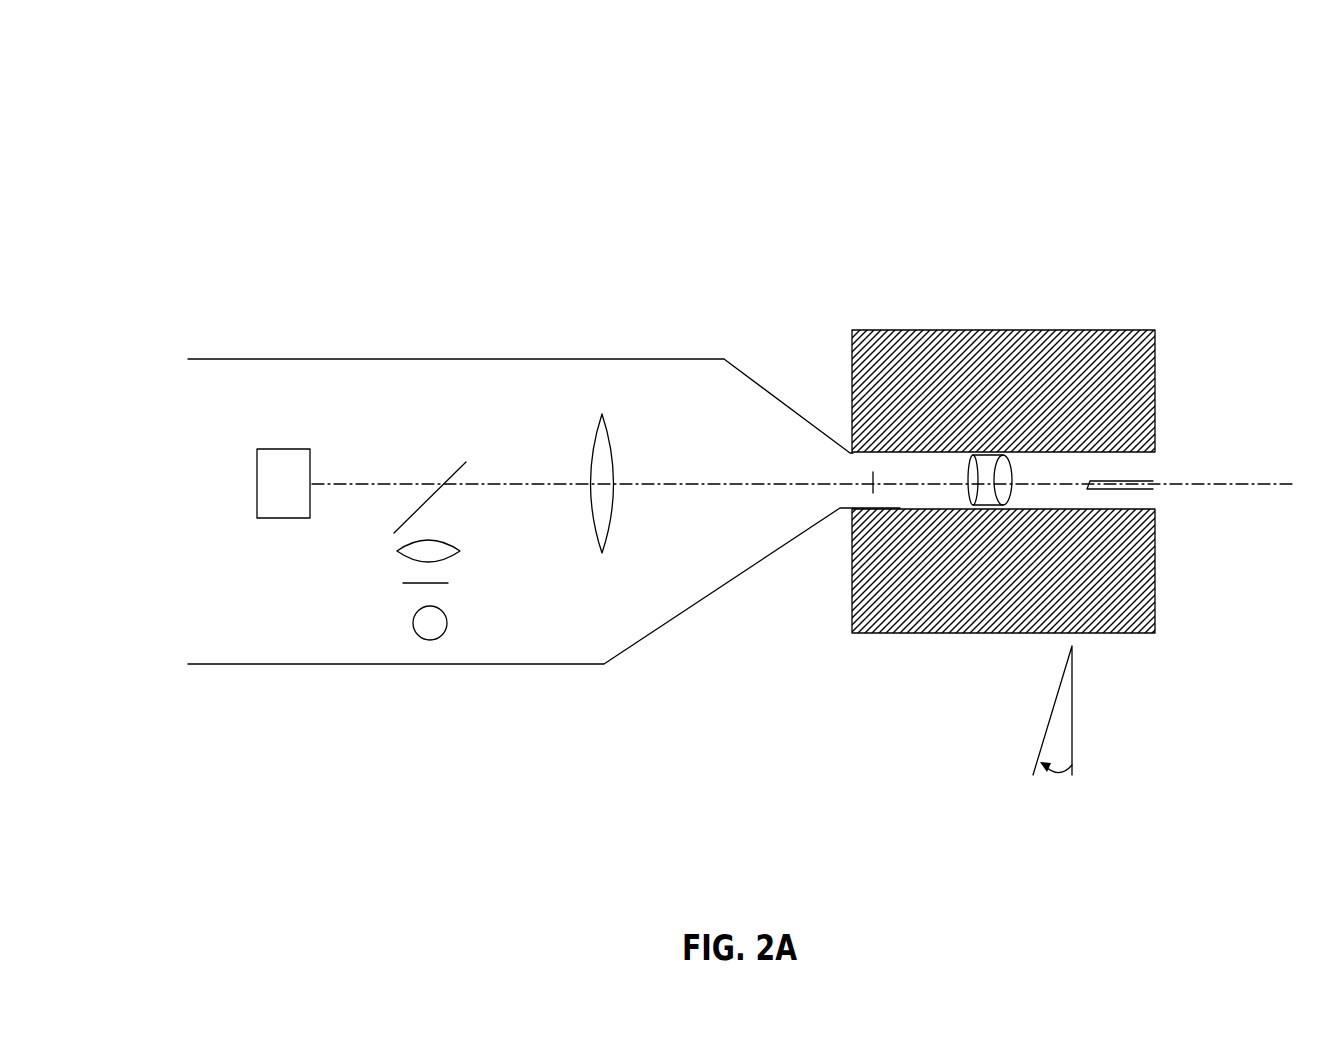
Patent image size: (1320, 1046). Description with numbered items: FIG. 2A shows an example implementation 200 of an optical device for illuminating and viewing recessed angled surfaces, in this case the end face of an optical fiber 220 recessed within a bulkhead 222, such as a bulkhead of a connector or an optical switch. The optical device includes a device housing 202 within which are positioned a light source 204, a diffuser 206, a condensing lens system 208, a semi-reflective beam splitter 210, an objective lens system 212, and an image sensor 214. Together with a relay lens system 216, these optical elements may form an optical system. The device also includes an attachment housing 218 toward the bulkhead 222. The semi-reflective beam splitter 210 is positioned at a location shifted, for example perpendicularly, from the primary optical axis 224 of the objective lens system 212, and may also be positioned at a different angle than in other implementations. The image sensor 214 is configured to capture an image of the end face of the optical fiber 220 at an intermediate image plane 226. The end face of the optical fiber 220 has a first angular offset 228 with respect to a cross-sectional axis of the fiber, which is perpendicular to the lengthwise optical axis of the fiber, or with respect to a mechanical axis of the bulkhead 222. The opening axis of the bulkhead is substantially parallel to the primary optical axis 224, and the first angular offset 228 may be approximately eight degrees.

The example implementations 200 is at (250, 64).
The device housing 202 is at (376, 359).
The light source 204 is at (413, 623).
The diffuser 206 is at (403, 583).
The condensing lens system 208 is at (397, 551).
The semi-reflective beam splitter 210 is at (466, 462).
The objective lens system 212 is at (600, 547).
The image sensor 214 is at (257, 484).
The relay lens system 216 is at (972, 498).
The attachment housing 218 is at (878, 500).
The optical fiber 220 is at (1153, 490).
The bulkhead 222 is at (1155, 375).
The primary optical axis 224 is at (702, 492).
The intermediate image plane 226 is at (864, 464).
The first angular offset 228 is at (1047, 730).